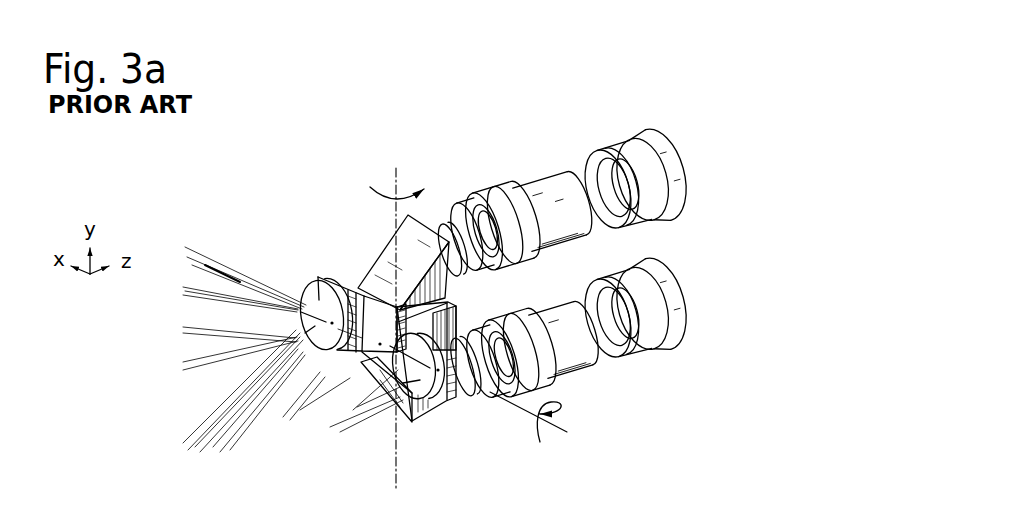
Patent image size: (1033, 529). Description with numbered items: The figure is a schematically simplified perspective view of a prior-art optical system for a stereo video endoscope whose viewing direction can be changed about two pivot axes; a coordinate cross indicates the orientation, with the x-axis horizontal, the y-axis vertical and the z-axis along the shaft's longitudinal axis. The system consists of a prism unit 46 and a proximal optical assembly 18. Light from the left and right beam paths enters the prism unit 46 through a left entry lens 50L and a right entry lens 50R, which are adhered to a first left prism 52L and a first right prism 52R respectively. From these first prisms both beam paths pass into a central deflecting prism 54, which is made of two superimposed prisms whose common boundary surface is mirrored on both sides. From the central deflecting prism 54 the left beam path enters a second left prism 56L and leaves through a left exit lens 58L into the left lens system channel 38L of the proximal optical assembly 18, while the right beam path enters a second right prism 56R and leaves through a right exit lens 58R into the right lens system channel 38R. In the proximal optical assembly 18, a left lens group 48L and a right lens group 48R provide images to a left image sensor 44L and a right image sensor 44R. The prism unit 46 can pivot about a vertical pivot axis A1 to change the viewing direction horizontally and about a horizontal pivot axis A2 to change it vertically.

The proximal optical assembly 18 is at (643, 95).
The left lens system channel 38L is at (573, 125).
The right lens system channel 38R is at (667, 397).
The left image sensor 44L is at (667, 148).
The right image sensor 44R is at (673, 317).
The prism unit 46 is at (350, 211).
The left lens group 48L is at (515, 176).
The right lens group 48R is at (580, 400).
The left entry lens 50L is at (414, 392).
The right entry lens 50R is at (302, 312).
The first left prism 52L is at (457, 312).
The first right prism 52R is at (337, 273).
The central deflecting prism 54 is at (377, 348).
The second left prism 56L is at (415, 228).
The second right prism 56R is at (400, 357).
The left exit lens 58L is at (448, 217).
The right exit lens 58R is at (458, 403).
The vertical pivot axis A1 is at (396, 178).
The horizontal pivot axis A2 is at (556, 428).